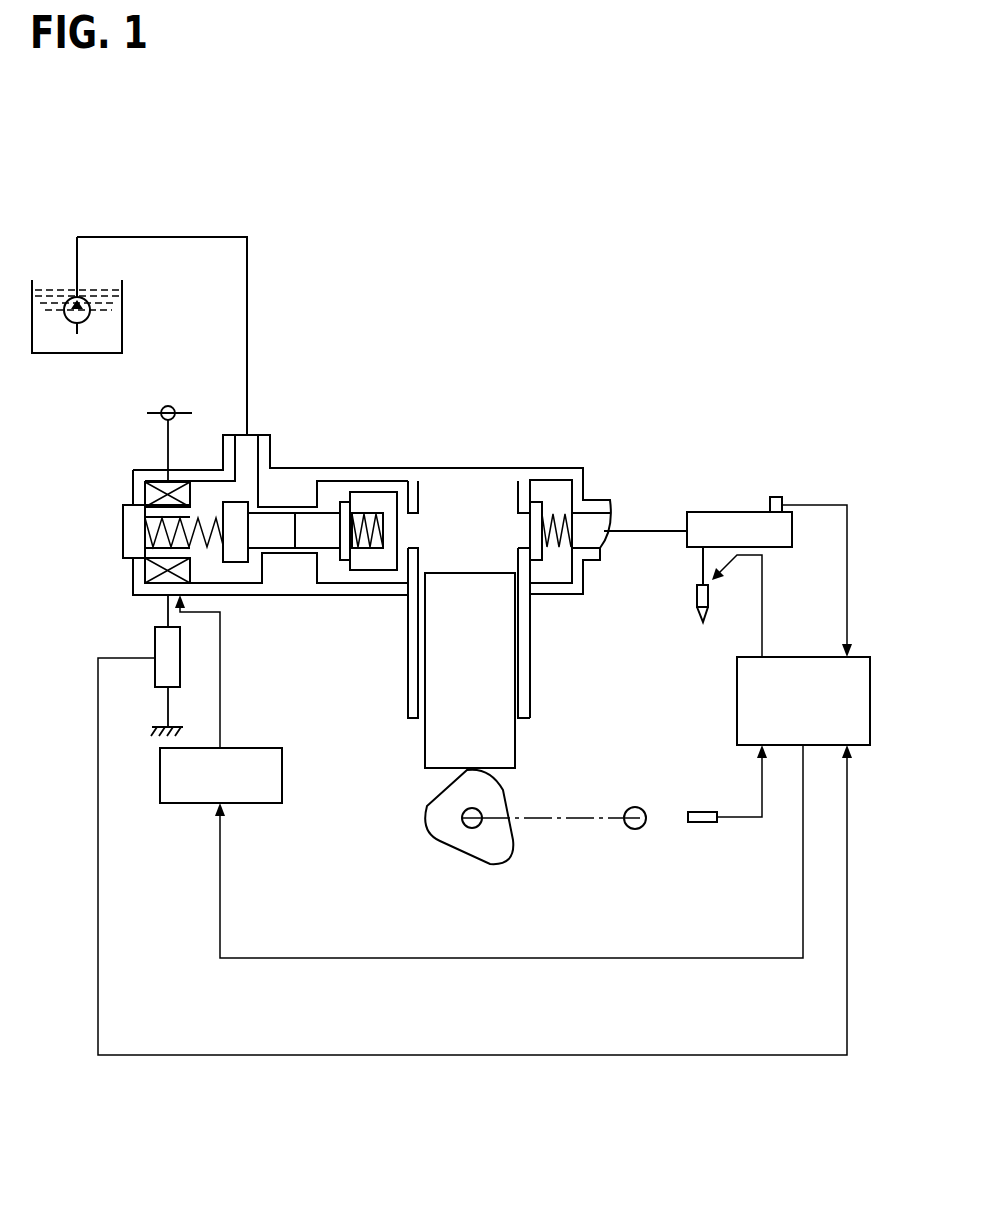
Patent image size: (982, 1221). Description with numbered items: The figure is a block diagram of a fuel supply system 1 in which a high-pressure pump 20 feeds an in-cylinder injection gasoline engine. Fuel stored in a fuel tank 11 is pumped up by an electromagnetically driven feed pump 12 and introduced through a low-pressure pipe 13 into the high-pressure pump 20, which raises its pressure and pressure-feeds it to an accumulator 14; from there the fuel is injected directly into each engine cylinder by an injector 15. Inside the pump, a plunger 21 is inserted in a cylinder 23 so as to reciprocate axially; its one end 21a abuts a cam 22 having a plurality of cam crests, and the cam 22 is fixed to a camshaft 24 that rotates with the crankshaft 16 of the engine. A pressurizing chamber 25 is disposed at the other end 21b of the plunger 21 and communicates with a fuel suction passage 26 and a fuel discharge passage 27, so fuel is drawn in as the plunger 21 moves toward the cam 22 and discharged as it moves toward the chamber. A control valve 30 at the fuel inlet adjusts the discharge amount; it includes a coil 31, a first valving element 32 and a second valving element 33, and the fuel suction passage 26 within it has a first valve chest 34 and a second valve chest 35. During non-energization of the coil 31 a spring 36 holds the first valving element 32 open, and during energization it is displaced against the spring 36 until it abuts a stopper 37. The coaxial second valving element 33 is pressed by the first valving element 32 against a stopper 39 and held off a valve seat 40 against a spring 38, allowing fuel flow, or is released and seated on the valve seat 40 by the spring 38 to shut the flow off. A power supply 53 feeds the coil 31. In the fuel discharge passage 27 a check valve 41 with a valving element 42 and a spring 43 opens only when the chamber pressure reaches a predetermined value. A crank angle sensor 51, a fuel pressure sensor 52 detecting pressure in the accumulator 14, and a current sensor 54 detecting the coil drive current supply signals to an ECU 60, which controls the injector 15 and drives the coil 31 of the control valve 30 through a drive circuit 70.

The fuel supply system 1 is at (723, 335).
The fuel tank 11 is at (62, 354).
The feed pump 12 is at (93, 308).
The low-pressure pipe 13 is at (208, 237).
The accumulator 14 is at (718, 512).
The injector 15 is at (697, 598).
The crankshaft 16 is at (638, 807).
The high-pressure pump 20 is at (575, 662).
The plunger 21 is at (500, 743).
The one end of the plunger 21a is at (437, 769).
The other end of the plunger 21b is at (478, 572).
The cam 22 is at (507, 792).
The cylinder 23 is at (422, 720).
The camshaft 24 is at (470, 827).
The pressurizing chamber 25 is at (437, 497).
The fuel suction passage 26 is at (250, 458).
The fuel discharge passage 27 is at (550, 572).
The control valve 30 is at (126, 583).
The coil 31 is at (133, 491).
The first valving element 32 is at (277, 535).
The second valving element 33 is at (307, 535).
The first valve chest 34 is at (202, 487).
The second valve chest 35 is at (328, 490).
The spring 36 is at (190, 545).
The stopper 37 is at (195, 558).
The spring 38 is at (367, 552).
The stopper 39 is at (342, 500).
The valve seat 40 is at (330, 565).
The check valve 41 is at (587, 413).
The valving element 42 is at (534, 502).
The spring 43 is at (556, 503).
The crank angle sensor 51 is at (703, 811).
The fuel pressure sensor 52 is at (774, 497).
The power supply 53 is at (168, 405).
The current sensor 54 is at (155, 633).
The electronic control unit (ECU) 60 is at (808, 657).
The drive circuit 70 is at (263, 748).